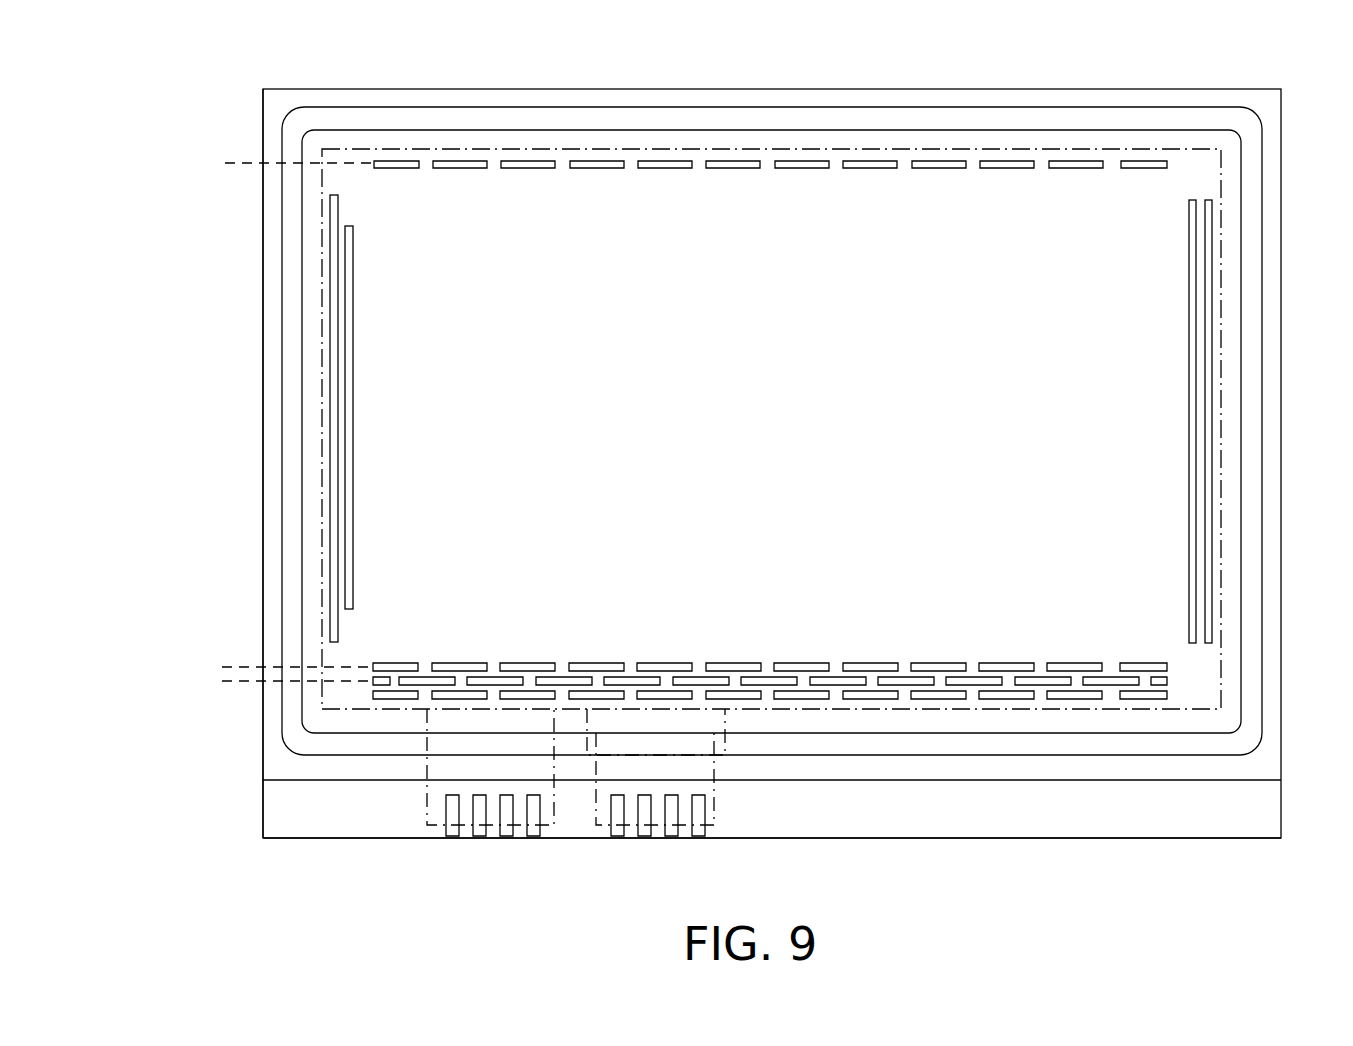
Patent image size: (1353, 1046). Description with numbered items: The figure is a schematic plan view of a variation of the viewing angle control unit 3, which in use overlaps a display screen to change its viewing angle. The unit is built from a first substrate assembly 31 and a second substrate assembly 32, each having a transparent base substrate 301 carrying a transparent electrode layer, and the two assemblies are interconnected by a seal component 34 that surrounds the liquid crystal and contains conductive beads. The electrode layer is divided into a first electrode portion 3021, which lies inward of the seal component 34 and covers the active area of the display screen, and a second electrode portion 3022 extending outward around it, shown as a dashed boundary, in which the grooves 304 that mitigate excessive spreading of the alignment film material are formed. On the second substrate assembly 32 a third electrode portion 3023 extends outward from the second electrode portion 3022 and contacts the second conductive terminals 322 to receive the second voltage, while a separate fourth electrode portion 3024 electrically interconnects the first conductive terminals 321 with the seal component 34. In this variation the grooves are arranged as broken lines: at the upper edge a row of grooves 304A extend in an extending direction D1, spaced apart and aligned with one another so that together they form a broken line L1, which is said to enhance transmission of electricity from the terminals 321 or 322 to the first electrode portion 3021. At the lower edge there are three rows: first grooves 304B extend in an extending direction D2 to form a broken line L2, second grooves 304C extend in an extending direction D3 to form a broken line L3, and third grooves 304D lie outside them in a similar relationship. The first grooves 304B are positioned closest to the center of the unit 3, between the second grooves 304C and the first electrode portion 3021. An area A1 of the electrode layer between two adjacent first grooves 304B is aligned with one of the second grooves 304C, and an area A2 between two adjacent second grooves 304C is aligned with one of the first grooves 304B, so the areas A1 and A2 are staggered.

The viewing angle control unit 3 is at (209, 72).
The first substrate assembly 31 is at (235, 600).
The second substrate assembly 32 is at (287, 855).
The transparent base substrate 301 is at (343, 813).
The seal component 34 is at (1255, 512).
The first electrode portion 3021 is at (865, 255).
The second electrode portion 3022 is at (338, 695).
The third electrode portion 3023 is at (550, 806).
The fourth electrode portion 3024 is at (708, 788).
The grooves 304 is at (825, 472).
The grooves 304A is at (666, 162).
The first grooves 304B is at (878, 670).
The second grooves 304C is at (1038, 685).
The third grooves 304D is at (1142, 699).
The first conductive terminals 321 is at (697, 810).
The second conductive terminals 322 is at (533, 810).
The extending direction D1 is at (210, 167).
The extending direction D2 is at (210, 671).
The extending direction D3 is at (210, 684).
The broken line L1 is at (1183, 170).
The broken line L2 is at (1183, 673).
The broken line L3 is at (1181, 690).
The area A1 is at (903, 665).
The area A2 is at (1010, 683).